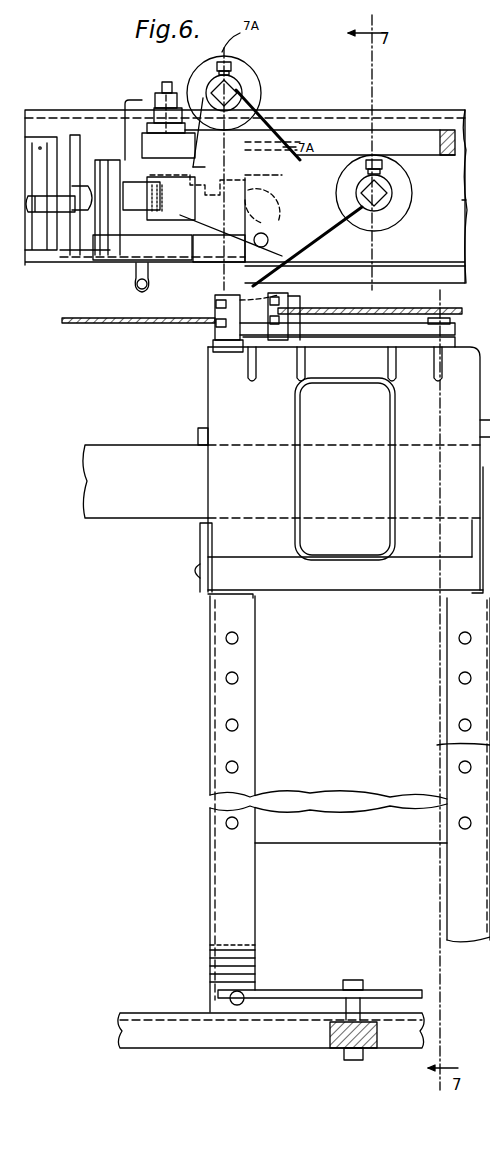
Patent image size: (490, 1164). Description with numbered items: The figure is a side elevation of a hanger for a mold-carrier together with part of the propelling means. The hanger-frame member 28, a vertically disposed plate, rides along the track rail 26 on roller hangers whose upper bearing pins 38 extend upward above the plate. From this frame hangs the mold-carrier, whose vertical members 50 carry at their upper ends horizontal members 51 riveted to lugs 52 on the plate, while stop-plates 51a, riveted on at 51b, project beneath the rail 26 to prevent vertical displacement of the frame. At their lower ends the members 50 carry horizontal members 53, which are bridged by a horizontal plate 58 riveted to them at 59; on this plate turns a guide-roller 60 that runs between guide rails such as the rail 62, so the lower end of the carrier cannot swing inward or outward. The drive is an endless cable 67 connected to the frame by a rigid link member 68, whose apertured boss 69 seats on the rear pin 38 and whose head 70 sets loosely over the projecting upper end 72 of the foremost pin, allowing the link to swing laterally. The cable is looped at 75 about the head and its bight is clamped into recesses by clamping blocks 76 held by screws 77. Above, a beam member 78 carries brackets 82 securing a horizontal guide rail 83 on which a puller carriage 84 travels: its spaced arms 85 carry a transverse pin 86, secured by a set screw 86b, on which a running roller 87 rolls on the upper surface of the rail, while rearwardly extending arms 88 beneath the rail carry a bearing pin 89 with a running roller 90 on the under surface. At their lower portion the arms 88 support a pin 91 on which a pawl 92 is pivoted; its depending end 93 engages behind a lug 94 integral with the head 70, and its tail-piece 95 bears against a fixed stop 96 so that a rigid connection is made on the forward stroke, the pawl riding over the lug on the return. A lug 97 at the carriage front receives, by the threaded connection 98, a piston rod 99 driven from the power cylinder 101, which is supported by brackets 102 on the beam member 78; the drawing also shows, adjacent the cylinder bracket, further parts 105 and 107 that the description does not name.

The track rail 26 is at (140, 452).
The hanger-frame member 28 is at (225, 478).
The bearing pin 38 is at (440, 310).
The vertically disposed parallel members 50 is at (256, 874).
The horizontal outwardly directed members 51 is at (200, 600).
The stop-plate 51a is at (472, 538).
The rivets 51b is at (488, 600).
The lugs 52 is at (216, 576).
The outwardly directed horizontal members 53 is at (268, 990).
The horizontal plate 58 is at (328, 990).
The rivets 59 is at (210, 978).
The guide-roller 60 is at (335, 1022).
The guide rail 62 is at (158, 1015).
The wire rope or cable 67 is at (96, 324).
The link member 68 is at (370, 334).
The apertured boss 69 is at (450, 340).
The head or boss 70 is at (213, 346).
The projecting upper end of foremost pin 72 is at (288, 302).
The cable loop 75 is at (258, 356).
The clamping blocks 76 is at (214, 326).
The screws 77 is at (214, 304).
The beam member 78 is at (466, 200).
The brackets 82 is at (135, 114).
The horizontal guide-bar or rail 83 is at (412, 135).
The puller carriage 84 is at (316, 168).
The upwardly extending spaced arms 85 is at (280, 110).
The transverse pin 86 is at (246, 86).
The set screw 86b is at (232, 68).
The running roller 87 is at (199, 72).
The rearwardly extending arms 88 is at (390, 203).
The bearing pin 89 is at (380, 193).
The running roller 90 is at (393, 218).
The transverse pin 91 is at (266, 237).
The pawl or tappet 92 is at (246, 225).
The depending end 93 is at (268, 272).
The lug or projection 94 is at (178, 277).
The tail-piece 95 is at (322, 172).
The fixed stop 96 is at (228, 196).
The lug 97 is at (142, 247).
The threaded connection 98 is at (186, 178).
The piston rod 99 is at (148, 210).
The power cylinder 101 is at (35, 240).
The brackets 102 is at (45, 137).
The plate 105 is at (118, 260).
The plate 107 is at (76, 163).